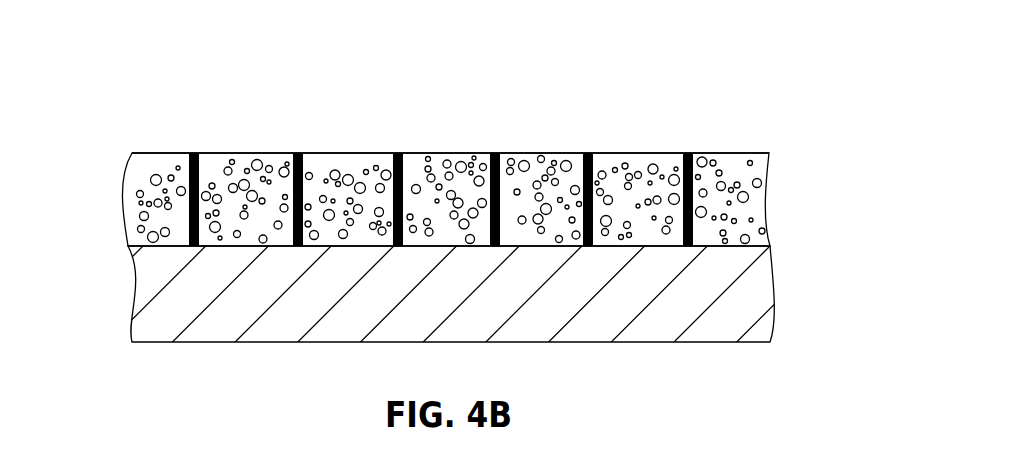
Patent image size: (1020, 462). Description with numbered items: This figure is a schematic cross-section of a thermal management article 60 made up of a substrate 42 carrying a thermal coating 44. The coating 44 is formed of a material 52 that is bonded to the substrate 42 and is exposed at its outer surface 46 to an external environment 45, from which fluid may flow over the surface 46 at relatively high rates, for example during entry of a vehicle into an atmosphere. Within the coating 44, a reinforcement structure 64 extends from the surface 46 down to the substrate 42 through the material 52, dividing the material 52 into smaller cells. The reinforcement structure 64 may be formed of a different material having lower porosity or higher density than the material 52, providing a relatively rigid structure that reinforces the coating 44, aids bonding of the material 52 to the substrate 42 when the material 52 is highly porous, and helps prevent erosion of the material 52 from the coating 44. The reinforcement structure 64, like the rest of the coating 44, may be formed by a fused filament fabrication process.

The thermal management article 60 is at (802, 70).
The substrate 42 is at (142, 295).
The thermal coating 44 is at (470, 160).
The external environment 45 is at (458, 106).
The surface of coating 46 is at (441, 167).
The material 52 is at (153, 158).
The reinforcement structure 64 is at (195, 153).